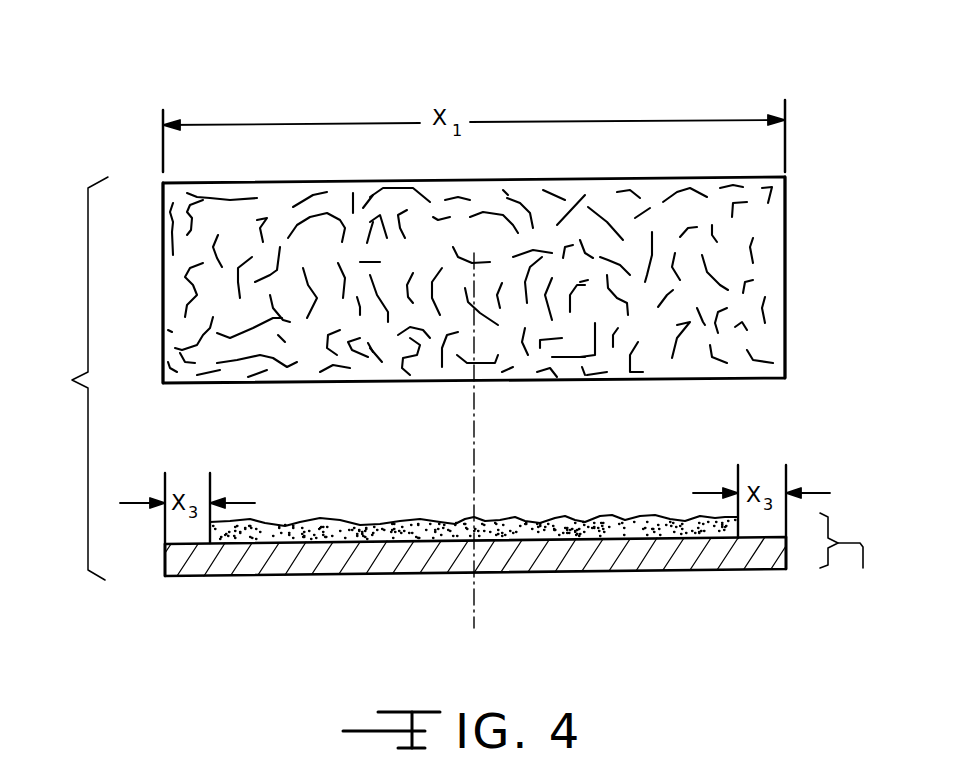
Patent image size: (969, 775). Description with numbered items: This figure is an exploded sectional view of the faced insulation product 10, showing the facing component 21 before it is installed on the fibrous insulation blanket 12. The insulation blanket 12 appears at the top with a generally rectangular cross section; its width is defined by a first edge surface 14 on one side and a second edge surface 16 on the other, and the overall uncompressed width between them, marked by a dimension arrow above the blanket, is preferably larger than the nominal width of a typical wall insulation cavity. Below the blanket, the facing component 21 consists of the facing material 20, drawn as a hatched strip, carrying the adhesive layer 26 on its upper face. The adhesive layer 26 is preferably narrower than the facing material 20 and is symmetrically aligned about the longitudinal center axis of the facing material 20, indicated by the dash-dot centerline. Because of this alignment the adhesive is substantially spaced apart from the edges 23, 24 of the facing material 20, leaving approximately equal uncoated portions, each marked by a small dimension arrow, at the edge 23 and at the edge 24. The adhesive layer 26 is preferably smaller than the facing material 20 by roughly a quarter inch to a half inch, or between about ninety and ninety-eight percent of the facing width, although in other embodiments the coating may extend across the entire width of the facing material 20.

The molded article assembly 10 is at (72, 380).
The fibrous insulation blanket 12 is at (792, 285).
The first edge surface 14 is at (785, 203).
The second edge surface 16 is at (163, 232).
The facing material 20 is at (475, 601).
The facing component 21 is at (849, 557).
The edge of the facing material 23 is at (786, 548).
The edge of the facing material 24 is at (130, 605).
The adhesive layer 26 is at (447, 520).